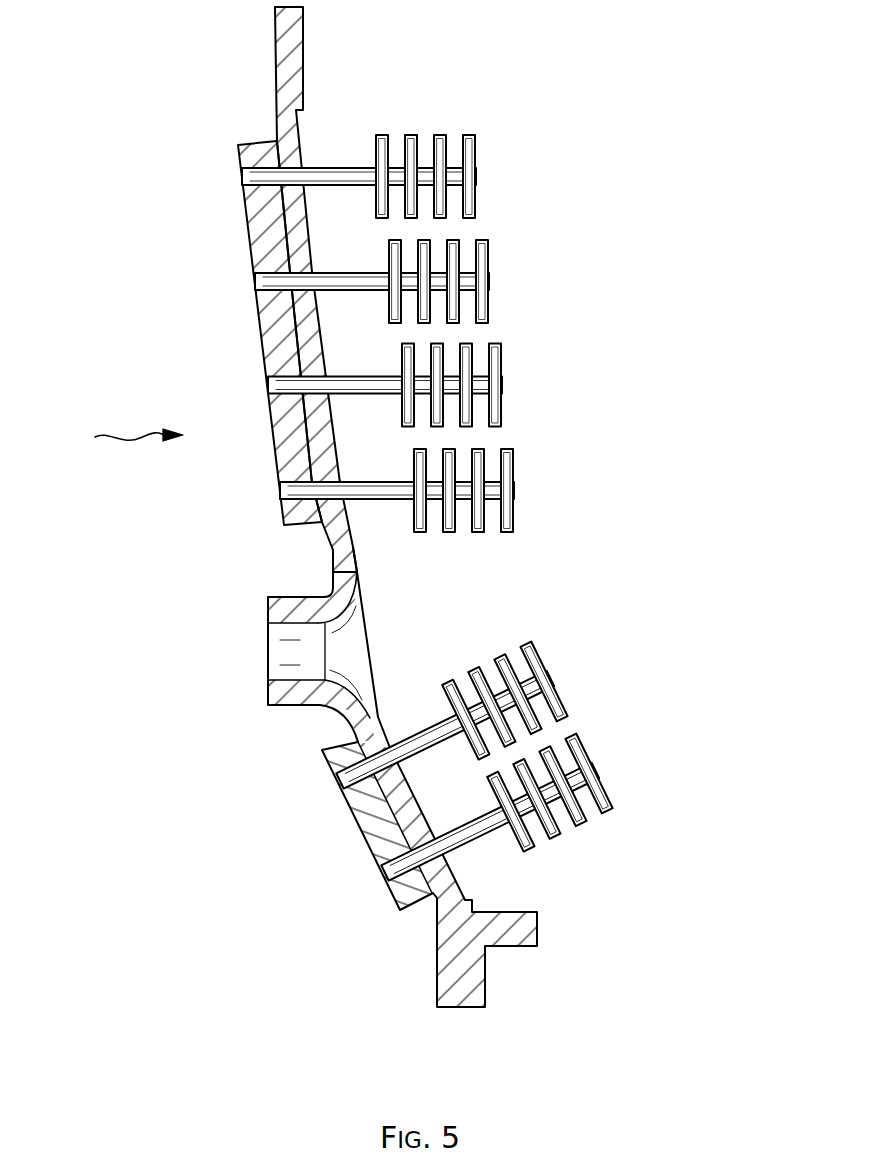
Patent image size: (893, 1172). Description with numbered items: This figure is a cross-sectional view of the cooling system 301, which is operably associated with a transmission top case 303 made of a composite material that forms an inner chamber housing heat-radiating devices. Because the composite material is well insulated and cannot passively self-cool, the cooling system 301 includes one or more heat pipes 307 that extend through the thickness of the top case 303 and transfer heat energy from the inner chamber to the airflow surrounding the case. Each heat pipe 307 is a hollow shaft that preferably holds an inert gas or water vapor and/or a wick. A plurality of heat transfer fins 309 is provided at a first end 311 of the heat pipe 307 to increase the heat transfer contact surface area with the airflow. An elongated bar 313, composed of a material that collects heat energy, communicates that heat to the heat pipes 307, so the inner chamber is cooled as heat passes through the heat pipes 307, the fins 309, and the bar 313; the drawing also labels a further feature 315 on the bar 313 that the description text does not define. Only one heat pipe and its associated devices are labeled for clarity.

The cooling system 301 is at (636, 82).
The transmission top case 303 is at (267, 692).
The heat pipe 307 is at (327, 167).
The heat transfer fins 309 is at (516, 178).
The first end 311 is at (472, 141).
The elongated bar 313 is at (248, 238).
The flange 315 is at (248, 128).